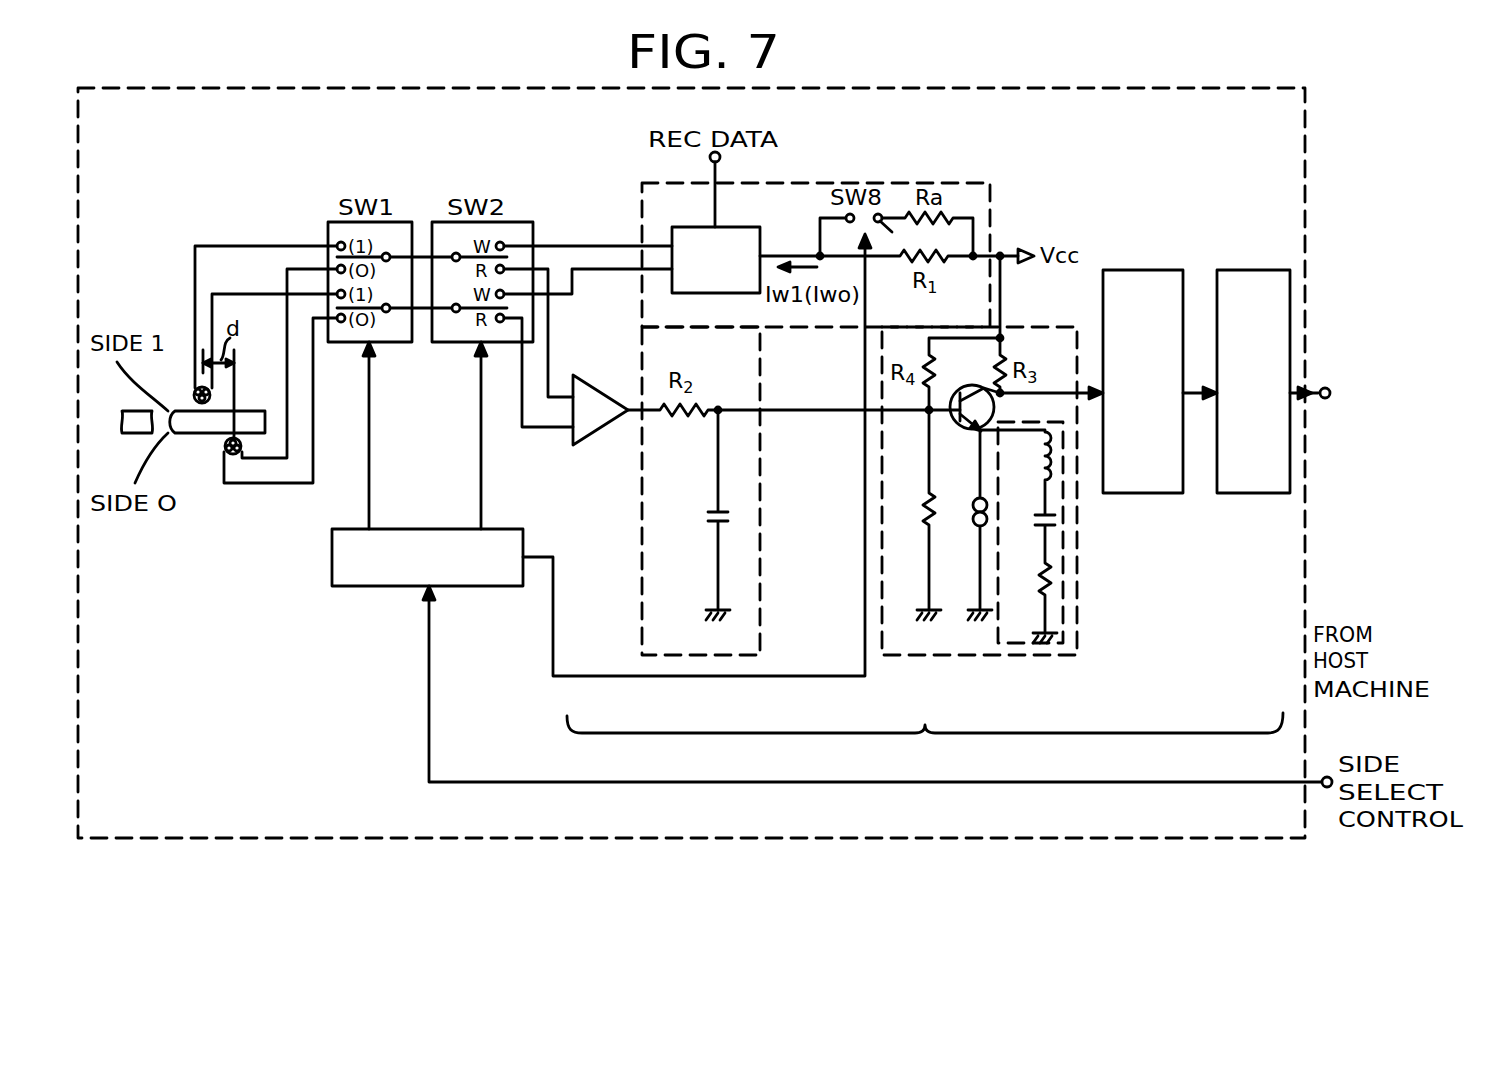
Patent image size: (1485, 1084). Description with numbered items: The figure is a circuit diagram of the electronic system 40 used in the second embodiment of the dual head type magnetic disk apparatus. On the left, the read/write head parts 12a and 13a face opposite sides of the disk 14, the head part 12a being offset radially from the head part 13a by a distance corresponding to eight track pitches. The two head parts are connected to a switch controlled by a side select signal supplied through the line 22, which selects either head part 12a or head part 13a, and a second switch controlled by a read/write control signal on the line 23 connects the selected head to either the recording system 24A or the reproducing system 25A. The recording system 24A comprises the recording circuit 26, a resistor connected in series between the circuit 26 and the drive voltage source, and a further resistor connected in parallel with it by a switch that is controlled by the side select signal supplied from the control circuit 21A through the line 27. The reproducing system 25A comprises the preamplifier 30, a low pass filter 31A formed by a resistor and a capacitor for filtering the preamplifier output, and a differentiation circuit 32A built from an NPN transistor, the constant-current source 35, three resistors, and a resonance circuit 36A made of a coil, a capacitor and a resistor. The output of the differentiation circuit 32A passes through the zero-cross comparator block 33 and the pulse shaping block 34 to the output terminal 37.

The read/write head part 12a is at (196, 400).
The read/write head part 13a is at (227, 441).
The disk 14 is at (245, 411).
The control circuit 21A is at (332, 560).
The line 22 is at (370, 416).
The line 23 is at (480, 464).
The recording system 24A is at (926, 183).
The reproducing system 25A is at (925, 744).
The recording circuit 26 is at (735, 227).
The line 27 is at (553, 626).
The preamplifier 30 is at (626, 414).
The low pass filter 31A is at (640, 592).
The differentiation circuit 32A is at (1019, 327).
The zero-cross comparator 33 is at (1138, 270).
The pulse shaping circuit 34 is at (1258, 493).
The constant-current source 35 is at (976, 521).
The resonance circuit 36A is at (1063, 613).
The output terminal 37 is at (1326, 388).
The electronic system 40 is at (1185, 125).